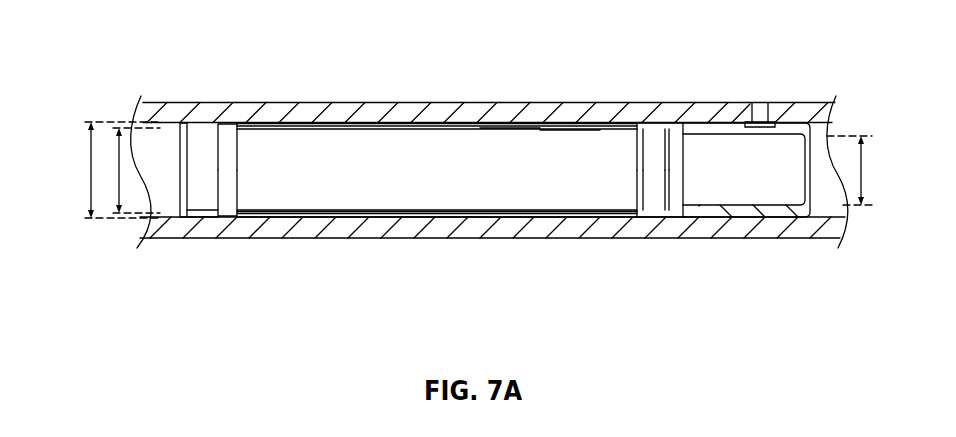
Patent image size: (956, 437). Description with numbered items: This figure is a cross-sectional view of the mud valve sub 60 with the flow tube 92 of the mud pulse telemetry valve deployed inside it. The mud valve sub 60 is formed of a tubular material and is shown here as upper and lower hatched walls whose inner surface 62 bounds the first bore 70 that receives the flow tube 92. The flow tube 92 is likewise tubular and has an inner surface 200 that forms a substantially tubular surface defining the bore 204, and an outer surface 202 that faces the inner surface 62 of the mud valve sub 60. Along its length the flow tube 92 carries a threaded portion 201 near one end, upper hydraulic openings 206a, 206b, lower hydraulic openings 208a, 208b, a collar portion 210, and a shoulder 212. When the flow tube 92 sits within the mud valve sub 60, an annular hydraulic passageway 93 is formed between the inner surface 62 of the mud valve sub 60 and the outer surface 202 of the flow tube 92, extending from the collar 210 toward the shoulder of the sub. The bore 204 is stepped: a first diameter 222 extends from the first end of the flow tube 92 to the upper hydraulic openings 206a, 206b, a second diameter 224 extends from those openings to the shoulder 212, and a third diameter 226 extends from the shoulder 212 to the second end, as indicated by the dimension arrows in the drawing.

The mud valve sub 60 is at (333, 103).
The inner surface 62 is at (180, 215).
The first bore 70 is at (146, 122).
The flow tube 92 is at (570, 130).
The annular hydraulic passageway 93 is at (512, 128).
The inner surface 200 is at (345, 130).
The threaded portion 201 is at (189, 130).
The outer surface 202 is at (390, 123).
The bore 204 is at (425, 210).
The upper hydraulic opening 206a is at (236, 124).
The upper hydraulic opening 206b is at (232, 220).
The lower hydraulic opening 208a is at (650, 125).
The lower hydraulic opening 208b is at (648, 218).
The collar portion 210 is at (197, 219).
The shoulder 212 is at (685, 209).
The first diameter 222 is at (90, 200).
The second diameter 224 is at (118, 170).
The third diameter 226 is at (862, 172).